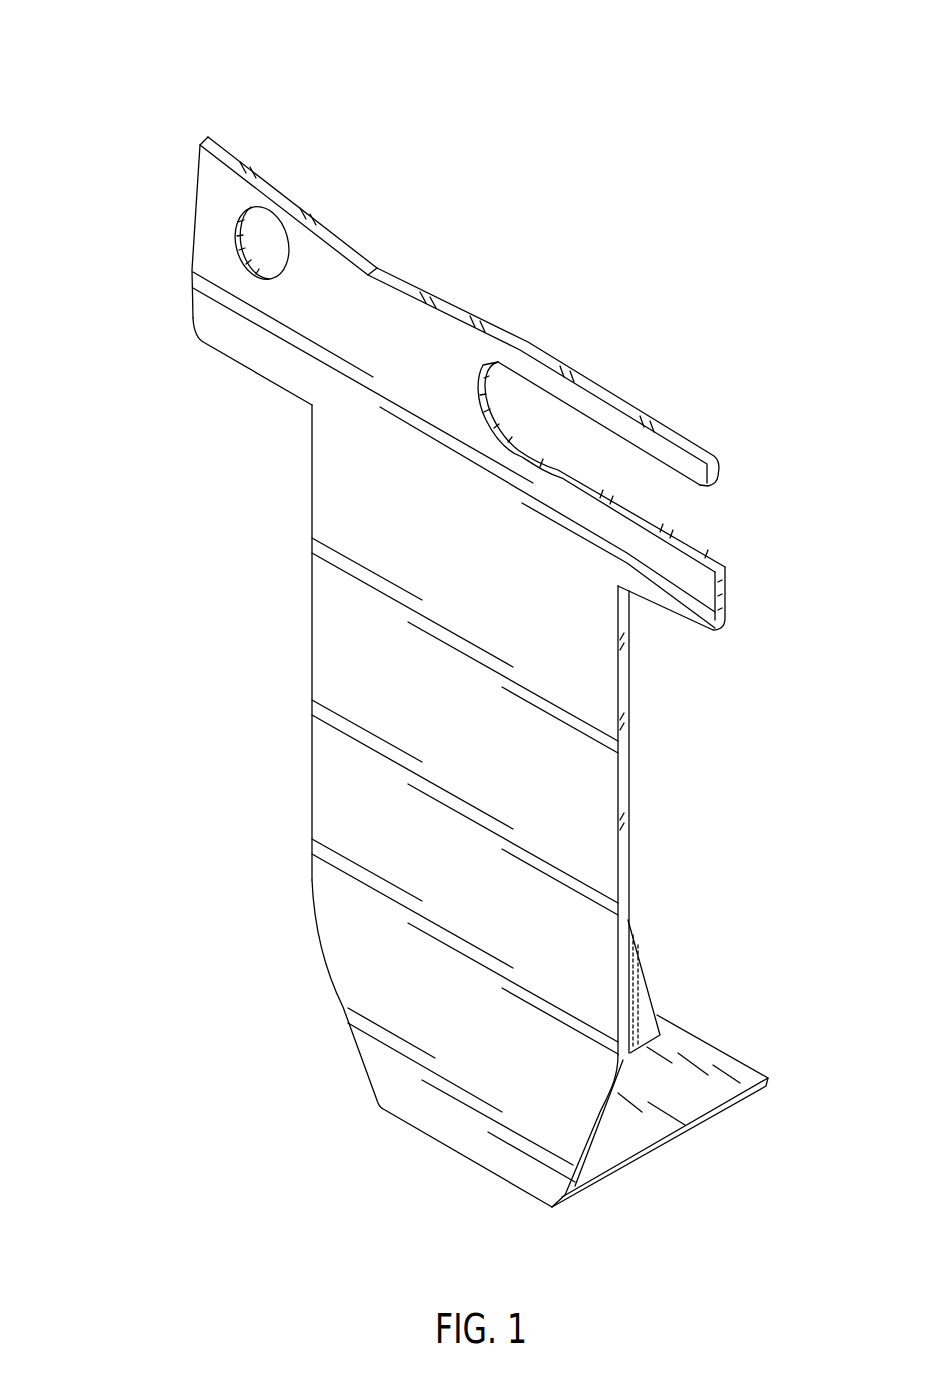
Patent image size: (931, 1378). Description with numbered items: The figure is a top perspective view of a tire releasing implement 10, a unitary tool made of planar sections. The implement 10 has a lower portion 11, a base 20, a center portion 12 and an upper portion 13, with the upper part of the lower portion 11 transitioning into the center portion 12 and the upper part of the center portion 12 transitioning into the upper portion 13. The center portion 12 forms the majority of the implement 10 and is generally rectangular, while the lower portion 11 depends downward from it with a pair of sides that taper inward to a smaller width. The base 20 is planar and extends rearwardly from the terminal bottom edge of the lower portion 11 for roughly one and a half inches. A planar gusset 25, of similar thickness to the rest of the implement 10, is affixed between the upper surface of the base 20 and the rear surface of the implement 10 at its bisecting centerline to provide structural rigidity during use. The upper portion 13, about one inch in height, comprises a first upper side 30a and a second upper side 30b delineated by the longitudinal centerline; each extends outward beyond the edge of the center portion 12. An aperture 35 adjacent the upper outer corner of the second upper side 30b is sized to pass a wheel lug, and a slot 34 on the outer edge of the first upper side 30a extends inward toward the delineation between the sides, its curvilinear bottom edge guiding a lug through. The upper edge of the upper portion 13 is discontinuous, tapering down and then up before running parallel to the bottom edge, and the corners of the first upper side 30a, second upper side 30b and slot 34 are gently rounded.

The tire releasing implement 10 is at (143, 181).
The lower portion 11 is at (448, 1018).
The center portion 12 is at (463, 718).
The upper portion 13 is at (392, 357).
The base 20 is at (737, 1072).
The gusset 25 is at (645, 1018).
The first upper side 30a is at (683, 606).
The second upper side 30b is at (237, 328).
The slot 34 is at (648, 478).
The aperture 35 is at (248, 250).